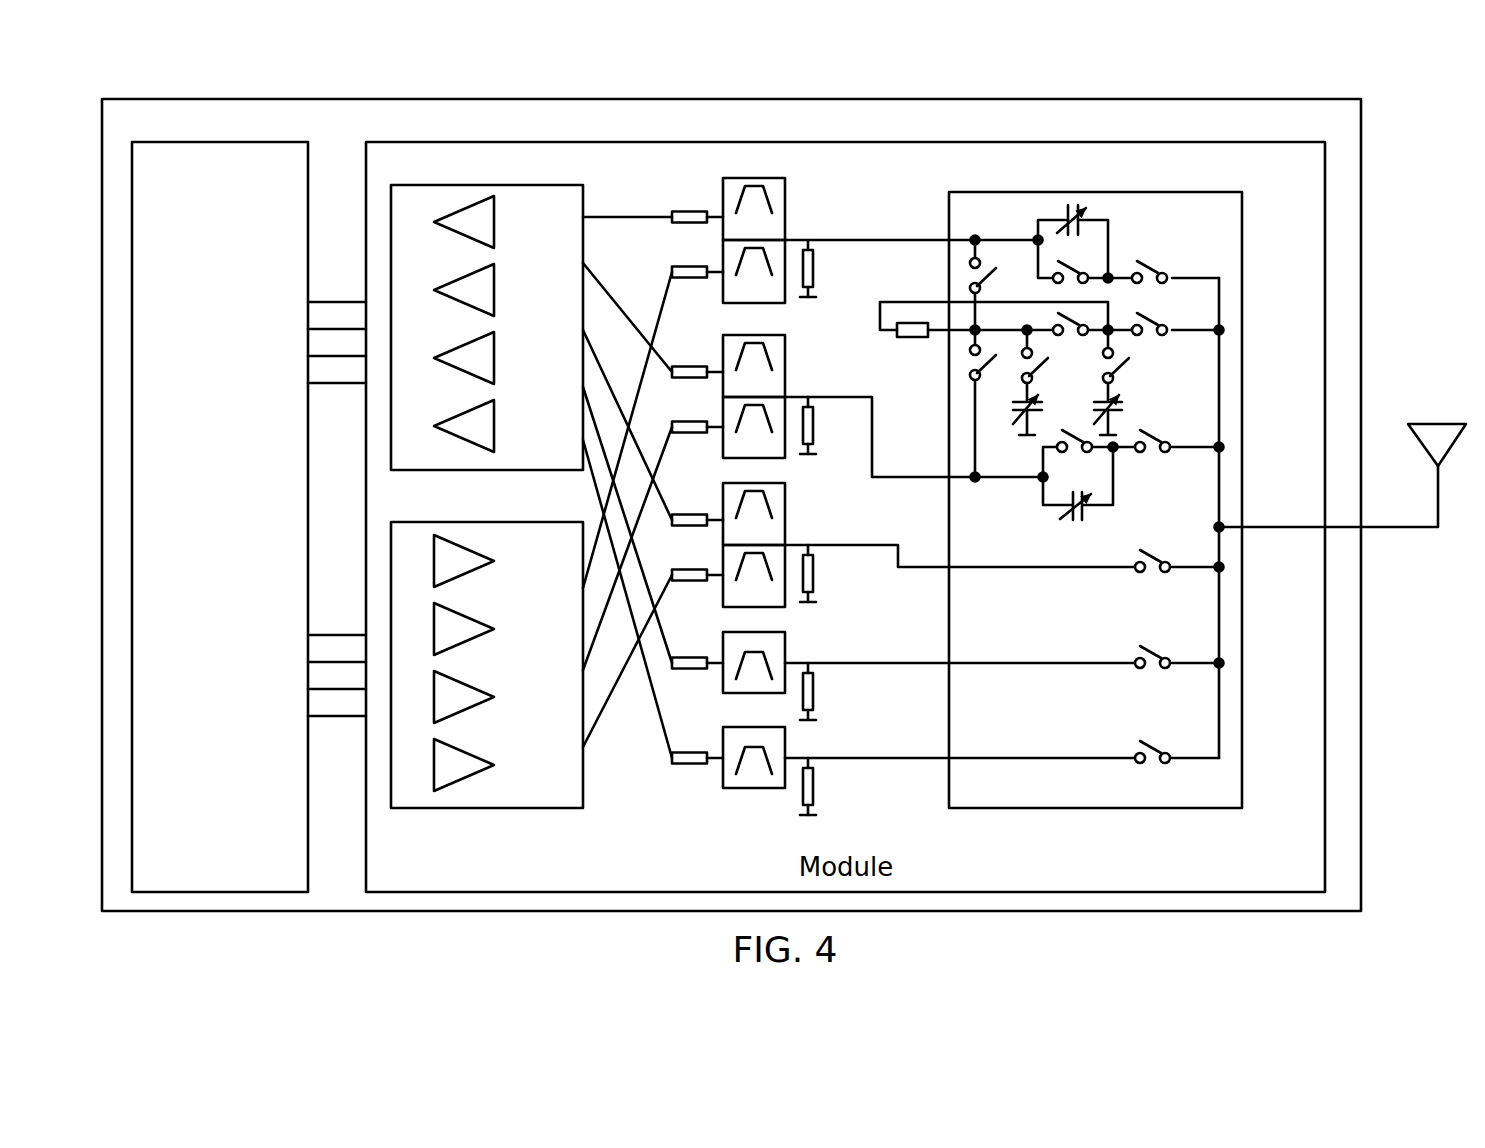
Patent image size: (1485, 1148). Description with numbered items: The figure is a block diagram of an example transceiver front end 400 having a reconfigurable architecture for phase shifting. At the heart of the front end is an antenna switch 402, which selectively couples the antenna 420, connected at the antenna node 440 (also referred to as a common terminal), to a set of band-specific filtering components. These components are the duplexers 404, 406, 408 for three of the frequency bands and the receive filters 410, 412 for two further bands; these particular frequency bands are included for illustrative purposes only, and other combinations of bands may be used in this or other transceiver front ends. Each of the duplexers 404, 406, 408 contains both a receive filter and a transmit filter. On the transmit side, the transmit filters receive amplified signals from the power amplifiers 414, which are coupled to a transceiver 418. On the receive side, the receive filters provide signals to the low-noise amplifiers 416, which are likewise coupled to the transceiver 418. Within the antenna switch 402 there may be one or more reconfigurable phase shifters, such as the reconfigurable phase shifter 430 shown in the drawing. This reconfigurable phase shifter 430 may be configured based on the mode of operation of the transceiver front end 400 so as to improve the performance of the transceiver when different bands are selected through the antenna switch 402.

The transceiver front end 400 is at (186, 63).
The antenna switch 402 is at (1061, 483).
The duplexer 404 is at (814, 228).
The duplexer 406 is at (814, 385).
The duplexer 408 is at (814, 527).
The receive filter 410 is at (826, 655).
The receive filter 412 is at (826, 750).
The power amplifiers 414 is at (518, 808).
The low-noise amplifiers 416 is at (520, 185).
The transceiver 418 is at (242, 142).
The antenna 420 is at (1438, 424).
The reconfigurable phase shifter 430 is at (1030, 513).
The antenna node 440 is at (1290, 530).